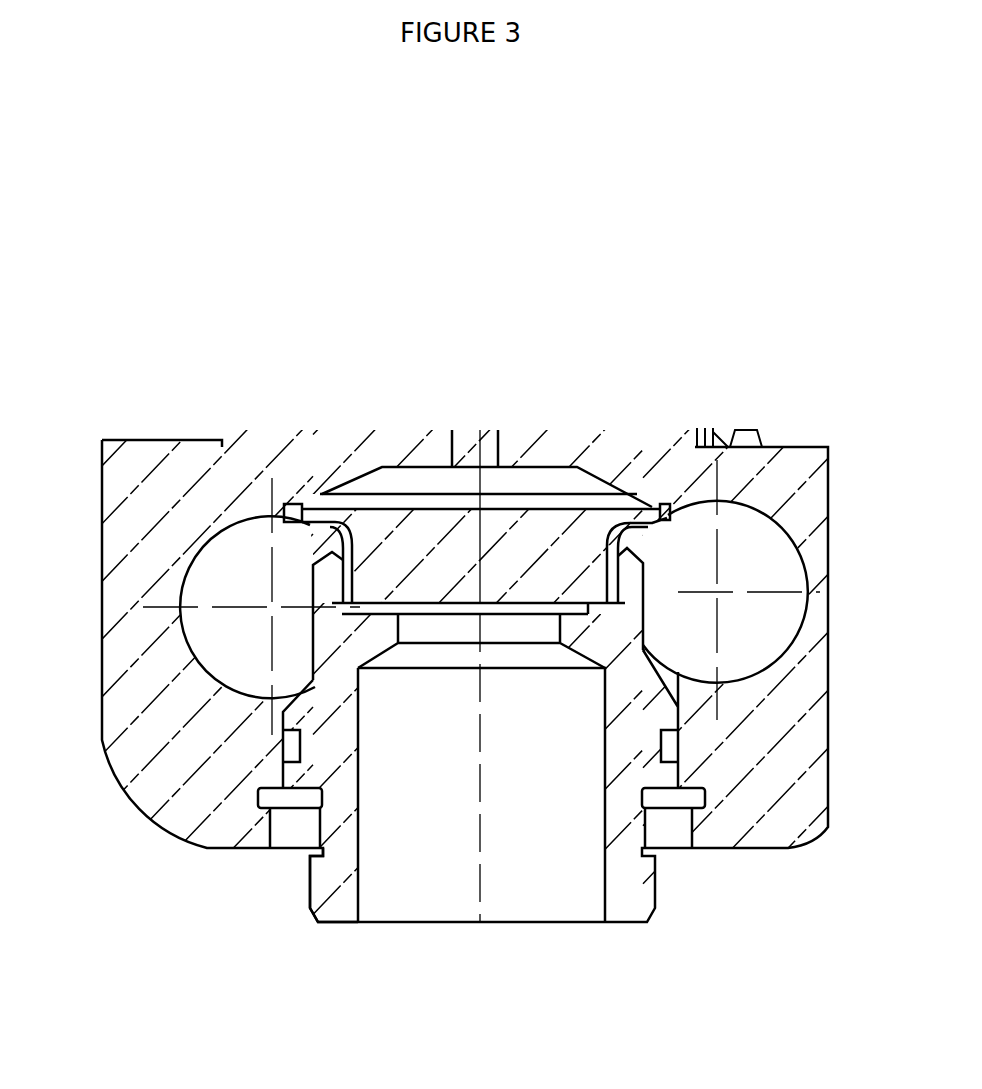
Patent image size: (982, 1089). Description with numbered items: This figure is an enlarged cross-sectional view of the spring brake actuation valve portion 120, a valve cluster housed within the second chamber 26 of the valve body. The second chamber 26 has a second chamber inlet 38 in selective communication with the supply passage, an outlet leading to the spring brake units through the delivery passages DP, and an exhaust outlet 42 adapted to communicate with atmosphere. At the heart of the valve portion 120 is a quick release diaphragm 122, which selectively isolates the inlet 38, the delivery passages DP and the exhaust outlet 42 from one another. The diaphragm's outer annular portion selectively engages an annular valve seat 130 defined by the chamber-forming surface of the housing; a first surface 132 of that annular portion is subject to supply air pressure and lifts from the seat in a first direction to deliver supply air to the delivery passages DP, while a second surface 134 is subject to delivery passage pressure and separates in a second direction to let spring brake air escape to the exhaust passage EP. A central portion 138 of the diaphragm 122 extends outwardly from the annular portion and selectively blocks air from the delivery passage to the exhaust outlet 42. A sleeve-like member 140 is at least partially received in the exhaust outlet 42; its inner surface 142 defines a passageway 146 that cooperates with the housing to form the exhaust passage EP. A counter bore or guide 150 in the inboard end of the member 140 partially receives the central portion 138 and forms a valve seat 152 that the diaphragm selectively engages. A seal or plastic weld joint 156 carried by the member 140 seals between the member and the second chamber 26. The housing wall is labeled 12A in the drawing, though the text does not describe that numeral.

The housing 12A is at (288, 508).
The second chamber 26 is at (372, 475).
The second chamber inlet 38 is at (488, 435).
The exhaust outlet 42 is at (420, 615).
The spring brake actuation valve portion 120 is at (563, 478).
The quick release diaphragm 122 is at (432, 523).
The annular valve seat 130 is at (655, 507).
The first surface 132 is at (290, 508).
The second surface 134 is at (303, 525).
The central portion 138 is at (542, 578).
The member 140 is at (338, 900).
The inner surface 142 is at (362, 825).
The passageway 146 is at (552, 877).
The guide 150 is at (605, 605).
The valve seat 152 is at (588, 608).
The seal or plastic weld joint 156 is at (288, 802).
The delivery passage DP is at (207, 640).
The exhaust passage EP is at (440, 885).